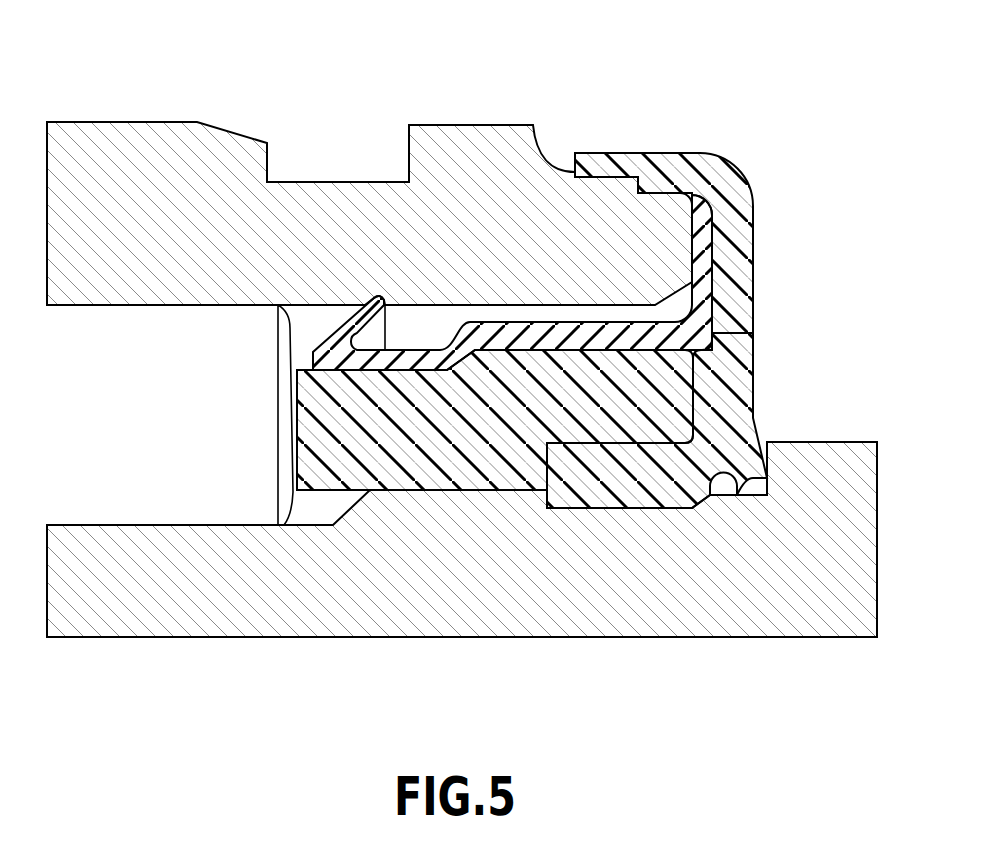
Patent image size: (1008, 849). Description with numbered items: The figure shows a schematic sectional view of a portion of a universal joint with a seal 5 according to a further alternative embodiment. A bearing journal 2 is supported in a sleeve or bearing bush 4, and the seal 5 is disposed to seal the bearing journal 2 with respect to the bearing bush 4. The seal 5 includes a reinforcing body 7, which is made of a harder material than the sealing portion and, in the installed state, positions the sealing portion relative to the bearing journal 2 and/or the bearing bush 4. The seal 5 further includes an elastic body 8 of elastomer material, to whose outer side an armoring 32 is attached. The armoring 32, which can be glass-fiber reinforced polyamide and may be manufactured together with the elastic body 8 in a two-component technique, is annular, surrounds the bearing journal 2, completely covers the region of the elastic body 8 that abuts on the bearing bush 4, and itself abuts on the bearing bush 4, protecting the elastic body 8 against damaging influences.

The bearing journal 2 is at (490, 603).
The bearing bush 4 is at (467, 223).
The seal 5 is at (776, 266).
The reinforcing body 7 is at (380, 441).
The elastic body 8 is at (725, 403).
The armoring 32 is at (724, 205).